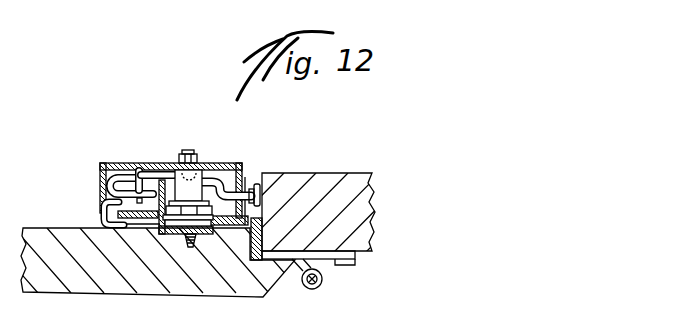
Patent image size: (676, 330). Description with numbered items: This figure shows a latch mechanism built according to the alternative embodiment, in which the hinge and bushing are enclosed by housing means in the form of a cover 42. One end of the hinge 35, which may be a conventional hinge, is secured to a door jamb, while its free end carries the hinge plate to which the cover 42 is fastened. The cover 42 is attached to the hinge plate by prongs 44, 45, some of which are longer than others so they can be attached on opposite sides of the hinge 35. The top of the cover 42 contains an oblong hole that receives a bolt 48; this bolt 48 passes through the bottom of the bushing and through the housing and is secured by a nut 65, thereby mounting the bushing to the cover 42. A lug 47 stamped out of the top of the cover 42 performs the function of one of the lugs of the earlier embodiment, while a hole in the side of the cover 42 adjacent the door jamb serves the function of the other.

The hinge 35 is at (273, 258).
The cover 42 is at (155, 162).
The prong 44 is at (116, 229).
The prong 45 is at (108, 203).
The lug 47 is at (128, 174).
The bolt 48 is at (190, 153).
The nut 65 is at (198, 158).